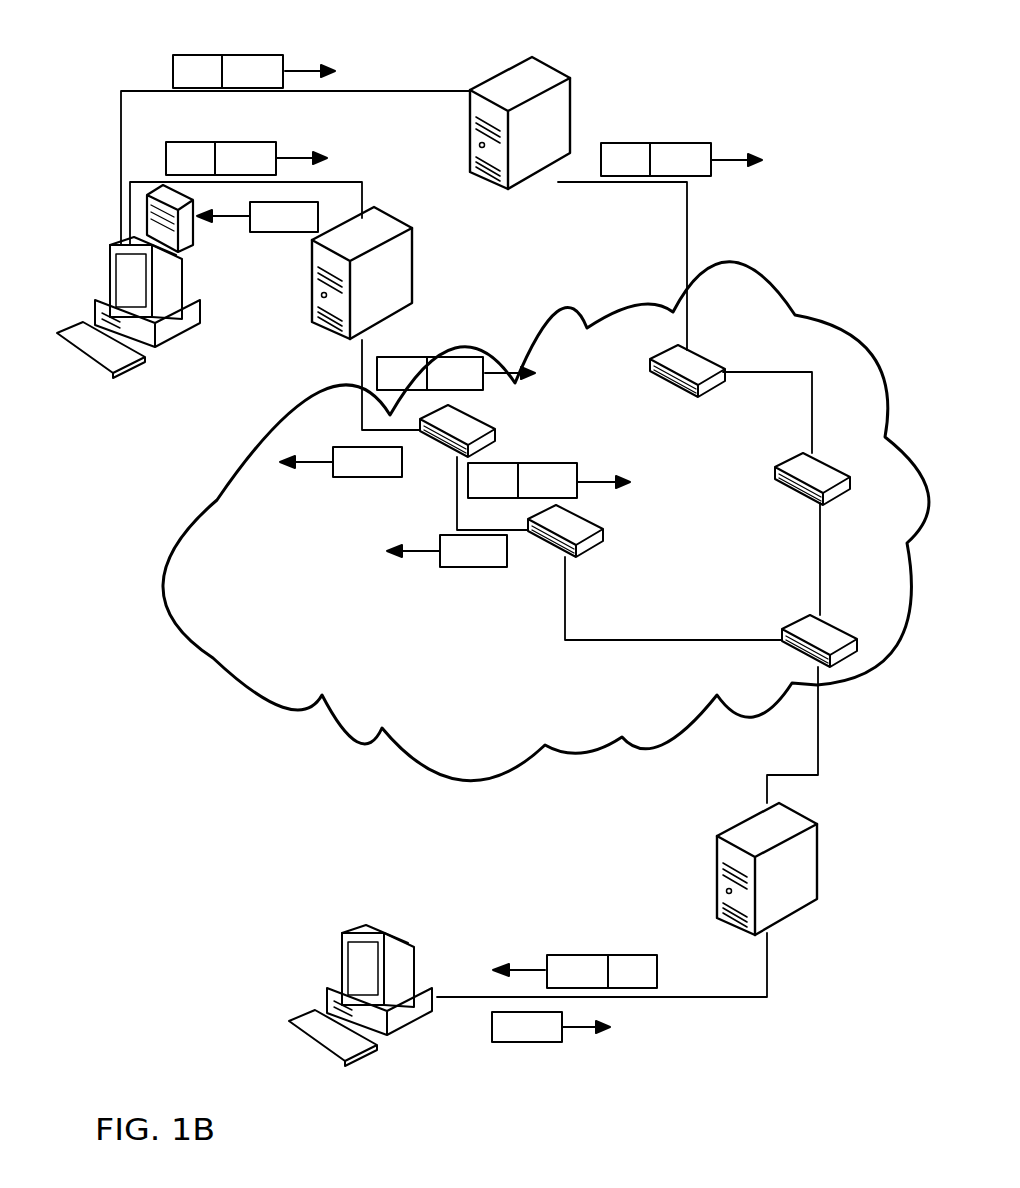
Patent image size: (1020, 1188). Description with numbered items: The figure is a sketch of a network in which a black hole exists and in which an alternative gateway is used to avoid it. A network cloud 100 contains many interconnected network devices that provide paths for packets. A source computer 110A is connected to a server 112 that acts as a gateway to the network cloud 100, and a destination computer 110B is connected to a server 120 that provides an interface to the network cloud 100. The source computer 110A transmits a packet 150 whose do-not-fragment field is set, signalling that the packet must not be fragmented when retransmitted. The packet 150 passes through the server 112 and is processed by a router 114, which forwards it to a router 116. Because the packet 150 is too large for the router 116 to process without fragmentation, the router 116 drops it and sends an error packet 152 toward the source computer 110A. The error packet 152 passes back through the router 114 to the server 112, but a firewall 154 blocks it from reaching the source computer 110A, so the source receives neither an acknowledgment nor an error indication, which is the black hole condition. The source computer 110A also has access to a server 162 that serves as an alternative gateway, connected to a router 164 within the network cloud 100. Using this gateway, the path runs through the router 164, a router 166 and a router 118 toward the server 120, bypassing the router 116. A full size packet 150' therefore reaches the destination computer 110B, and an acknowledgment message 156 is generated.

The network cloud 100 is at (800, 310).
The source computer 110A is at (118, 245).
The destination computer 110B is at (393, 1030).
The server 112 is at (398, 221).
The router 114 is at (485, 427).
The router 116 is at (598, 527).
The router 118 is at (838, 630).
The server 120 is at (797, 913).
The packet 150 is at (398, 298).
The full size packet 150' is at (467, 500).
The error packet 152 is at (305, 233).
The firewall 154 is at (195, 231).
The acknowledgment message 156 is at (518, 1043).
The server 162 is at (556, 76).
The router 164 is at (722, 366).
The router 166 is at (833, 470).